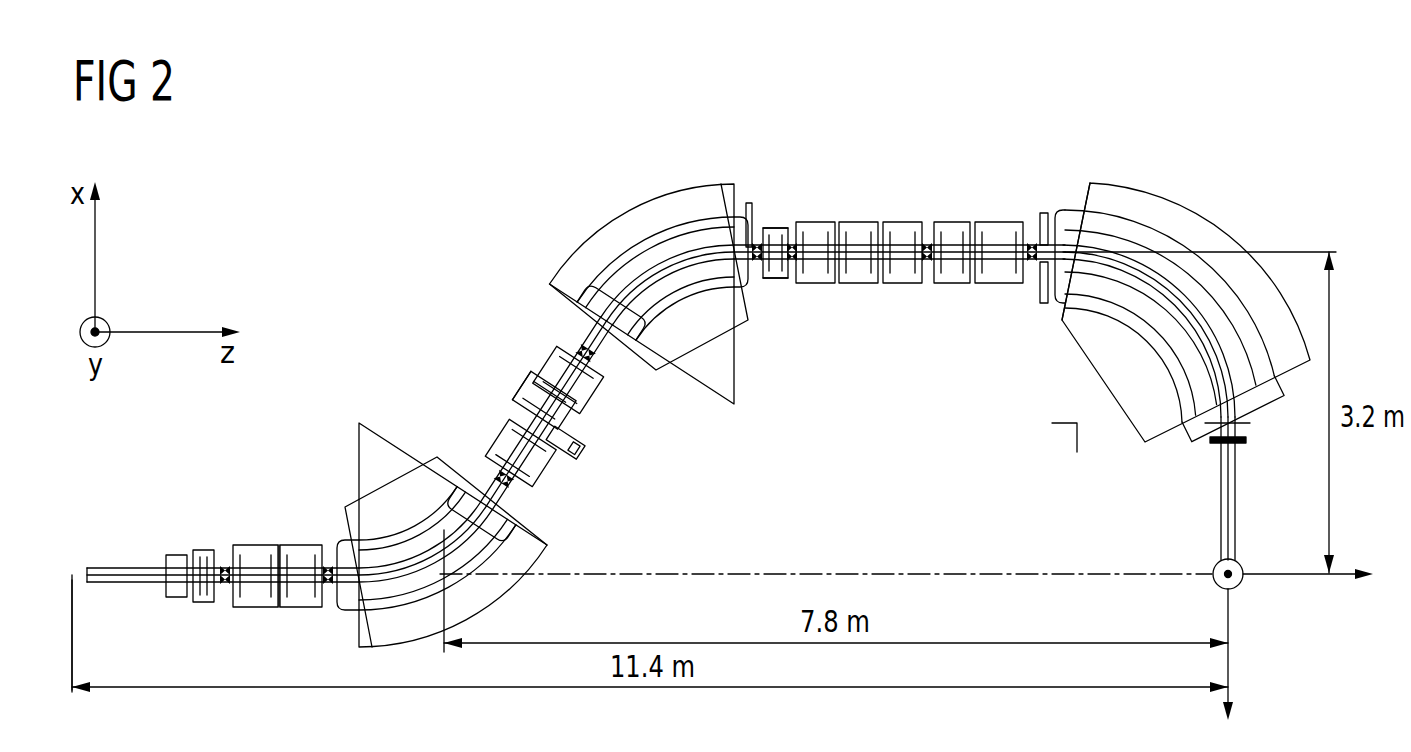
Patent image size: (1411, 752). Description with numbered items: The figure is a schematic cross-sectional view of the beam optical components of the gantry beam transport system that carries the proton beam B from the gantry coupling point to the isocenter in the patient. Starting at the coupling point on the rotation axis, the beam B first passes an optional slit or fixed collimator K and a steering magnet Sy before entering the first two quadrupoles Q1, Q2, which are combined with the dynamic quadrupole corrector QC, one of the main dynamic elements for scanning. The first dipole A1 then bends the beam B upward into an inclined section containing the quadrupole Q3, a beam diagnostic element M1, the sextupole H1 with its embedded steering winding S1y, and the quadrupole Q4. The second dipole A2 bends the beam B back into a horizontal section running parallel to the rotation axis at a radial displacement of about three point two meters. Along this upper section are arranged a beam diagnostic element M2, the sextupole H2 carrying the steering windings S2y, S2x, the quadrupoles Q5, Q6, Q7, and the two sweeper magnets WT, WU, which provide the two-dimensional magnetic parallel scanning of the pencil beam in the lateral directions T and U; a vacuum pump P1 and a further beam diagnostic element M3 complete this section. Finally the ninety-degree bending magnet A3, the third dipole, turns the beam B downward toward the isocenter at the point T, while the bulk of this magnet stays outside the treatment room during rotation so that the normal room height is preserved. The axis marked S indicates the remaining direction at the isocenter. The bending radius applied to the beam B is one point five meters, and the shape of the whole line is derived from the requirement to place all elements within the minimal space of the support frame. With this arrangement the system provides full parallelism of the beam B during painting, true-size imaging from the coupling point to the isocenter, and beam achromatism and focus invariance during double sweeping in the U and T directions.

The proton beam B is at (127, 567).
The steering magnet Sy is at (203, 552).
The dynamic quadrupole corrector QC is at (272, 530).
The quadrupole Q1 is at (257, 607).
The quadrupole Q2 is at (302, 607).
The slit or fixed collimator K is at (113, 635).
The dipole A1 is at (510, 590).
The quadrupole Q3 is at (497, 437).
The beam diagnostic element M1 is at (583, 452).
The steering magnet S1y is at (467, 360).
The sextupole H1 is at (518, 396).
The quadrupole Q4 is at (543, 365).
The dipole A2 is at (583, 232).
The beam diagnostic element M2 is at (748, 203).
The steering magnet S2y is at (796, 181).
The steering magnet S2x is at (796, 173).
The sextupole H2 is at (792, 228).
The quadrupole Q5 is at (817, 283).
The quadrupole Q6 is at (860, 283).
The quadrupole Q7 is at (905, 283).
The sweeper magnet WT is at (942, 222).
The sweeper magnet WU is at (1015, 222).
The vacuum pump P1 is at (1068, 178).
The beam diagnostic element M3 is at (1043, 305).
The 90° bending magnet A3 is at (1217, 220).
The lateral direction T is at (1218, 590).
The lateral direction U is at (1308, 595).
The axis direction S is at (1240, 659).